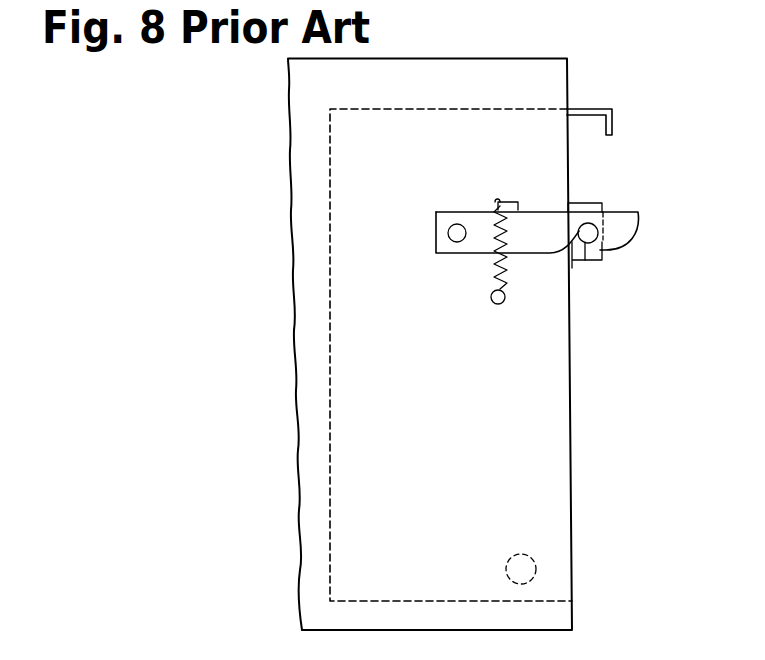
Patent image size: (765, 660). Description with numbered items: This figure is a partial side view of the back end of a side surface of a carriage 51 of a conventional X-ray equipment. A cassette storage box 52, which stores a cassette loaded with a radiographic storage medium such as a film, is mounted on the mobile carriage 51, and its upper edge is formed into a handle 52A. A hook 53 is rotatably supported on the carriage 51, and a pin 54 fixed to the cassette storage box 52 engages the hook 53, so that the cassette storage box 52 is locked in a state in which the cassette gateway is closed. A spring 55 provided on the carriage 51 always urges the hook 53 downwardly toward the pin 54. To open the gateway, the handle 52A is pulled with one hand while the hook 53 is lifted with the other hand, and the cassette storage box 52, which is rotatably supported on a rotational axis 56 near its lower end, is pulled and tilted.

The mobile carriage 51 is at (577, 81).
The cassette storage box 52 is at (550, 463).
The handle 52A is at (616, 120).
The hook 53 is at (543, 215).
The pin 54 is at (590, 260).
The spring 55 is at (495, 273).
The rotational axis 56 is at (537, 563).